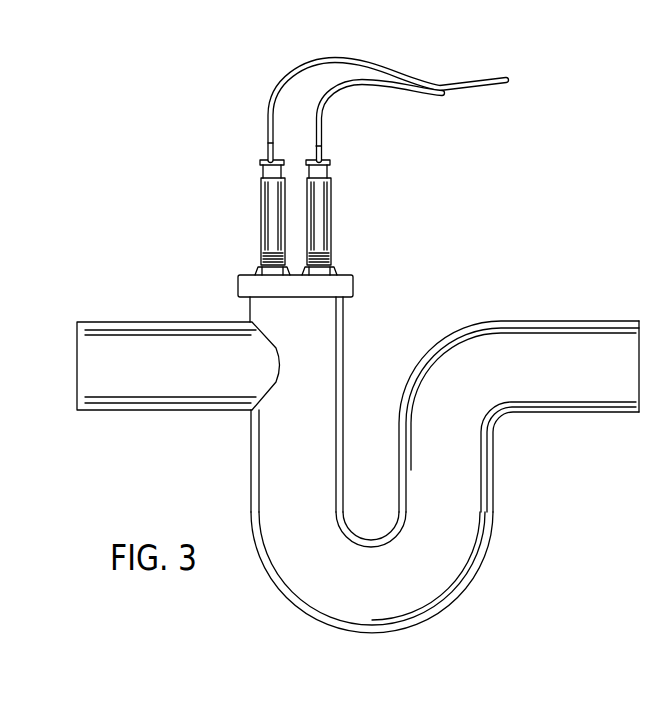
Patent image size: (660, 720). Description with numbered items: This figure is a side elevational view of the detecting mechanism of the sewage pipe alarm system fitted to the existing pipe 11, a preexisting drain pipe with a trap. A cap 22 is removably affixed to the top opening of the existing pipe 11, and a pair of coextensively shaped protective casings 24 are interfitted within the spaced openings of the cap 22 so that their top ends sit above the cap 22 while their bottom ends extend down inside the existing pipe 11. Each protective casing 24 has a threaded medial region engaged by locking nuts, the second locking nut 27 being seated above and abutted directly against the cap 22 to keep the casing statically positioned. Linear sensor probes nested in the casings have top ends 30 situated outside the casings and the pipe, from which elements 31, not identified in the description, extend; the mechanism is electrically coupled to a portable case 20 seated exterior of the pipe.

The existing pipe 11 is at (474, 520).
The portable case 20 is at (392, 237).
The cap 22 is at (348, 281).
The protective casing 24 is at (268, 227).
The second locking nut 27 is at (254, 268).
The top end of sensor probe 30 is at (269, 143).
The sensor lead tube 31 is at (366, 64).